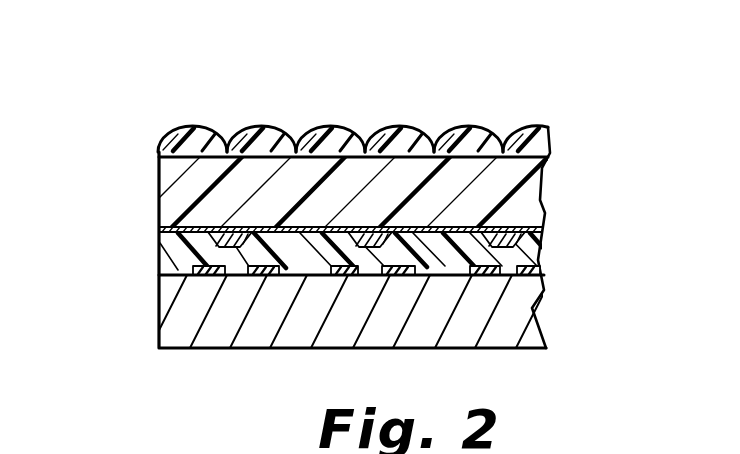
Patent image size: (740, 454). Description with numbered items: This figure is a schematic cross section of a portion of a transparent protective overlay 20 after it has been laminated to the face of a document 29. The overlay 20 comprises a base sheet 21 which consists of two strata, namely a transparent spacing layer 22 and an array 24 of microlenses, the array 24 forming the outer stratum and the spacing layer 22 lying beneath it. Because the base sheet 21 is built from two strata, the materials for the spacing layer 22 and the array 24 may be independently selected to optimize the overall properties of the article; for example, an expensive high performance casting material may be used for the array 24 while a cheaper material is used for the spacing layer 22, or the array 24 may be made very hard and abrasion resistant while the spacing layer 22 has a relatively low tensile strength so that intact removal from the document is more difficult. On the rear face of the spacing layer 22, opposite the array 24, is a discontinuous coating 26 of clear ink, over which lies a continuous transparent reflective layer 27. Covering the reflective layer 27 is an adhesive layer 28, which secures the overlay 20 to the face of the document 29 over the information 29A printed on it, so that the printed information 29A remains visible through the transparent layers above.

The overlay 20 is at (488, 93).
The base sheet 21 is at (124, 127).
The transparent spacing layer 22 is at (545, 165).
The array of microlenses 24 is at (203, 132).
The discontinuous coating of clear ink 26 is at (366, 230).
The transparent reflective layer 27 is at (445, 227).
The adhesive layer 28 is at (178, 267).
The document 29 is at (172, 328).
The information 29A is at (482, 264).